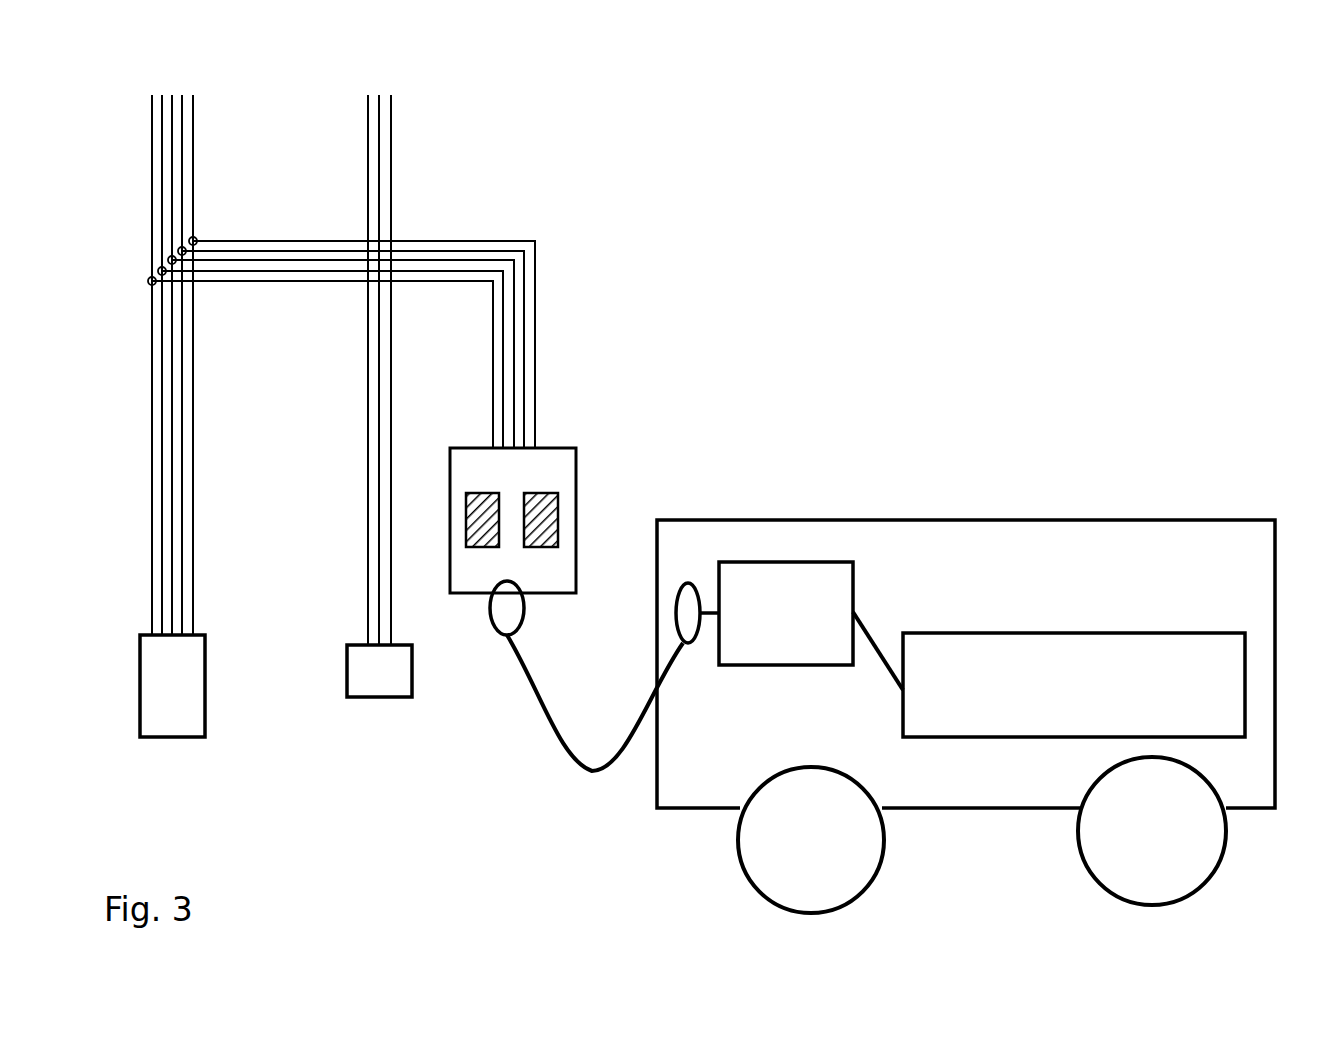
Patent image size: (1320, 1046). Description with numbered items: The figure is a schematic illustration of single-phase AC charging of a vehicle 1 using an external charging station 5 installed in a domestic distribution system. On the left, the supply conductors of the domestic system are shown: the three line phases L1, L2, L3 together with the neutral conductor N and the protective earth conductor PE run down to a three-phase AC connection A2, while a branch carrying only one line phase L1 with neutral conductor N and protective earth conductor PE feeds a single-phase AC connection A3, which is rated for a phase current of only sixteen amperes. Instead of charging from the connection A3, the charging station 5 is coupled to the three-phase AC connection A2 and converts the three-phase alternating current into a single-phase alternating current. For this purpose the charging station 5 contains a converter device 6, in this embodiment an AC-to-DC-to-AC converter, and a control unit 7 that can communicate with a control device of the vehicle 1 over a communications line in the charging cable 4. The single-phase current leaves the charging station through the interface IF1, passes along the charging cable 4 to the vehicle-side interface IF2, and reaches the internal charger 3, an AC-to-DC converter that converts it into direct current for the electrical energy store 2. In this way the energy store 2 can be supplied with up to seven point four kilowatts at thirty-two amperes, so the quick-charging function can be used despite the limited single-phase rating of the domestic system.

The vehicle 1 is at (960, 494).
The electrical energy store 2 is at (1074, 685).
The internal charger 3 is at (811, 626).
The charging cable 4 is at (570, 760).
The charging station 5 is at (576, 458).
The converter device 6 is at (466, 520).
The control unit 7 is at (558, 520).
The interface IF1 is at (503, 637).
The interface IF2 is at (690, 645).
The three-phase AC connection A2 is at (205, 703).
The single-phase AC connection A3 is at (379, 698).
The line phase L1 is at (152, 455).
The line phase L2 is at (162, 407).
The line phase L3 is at (172, 442).
The neutral conductor N is at (182, 203).
The protective earth conductor PE is at (193, 141).